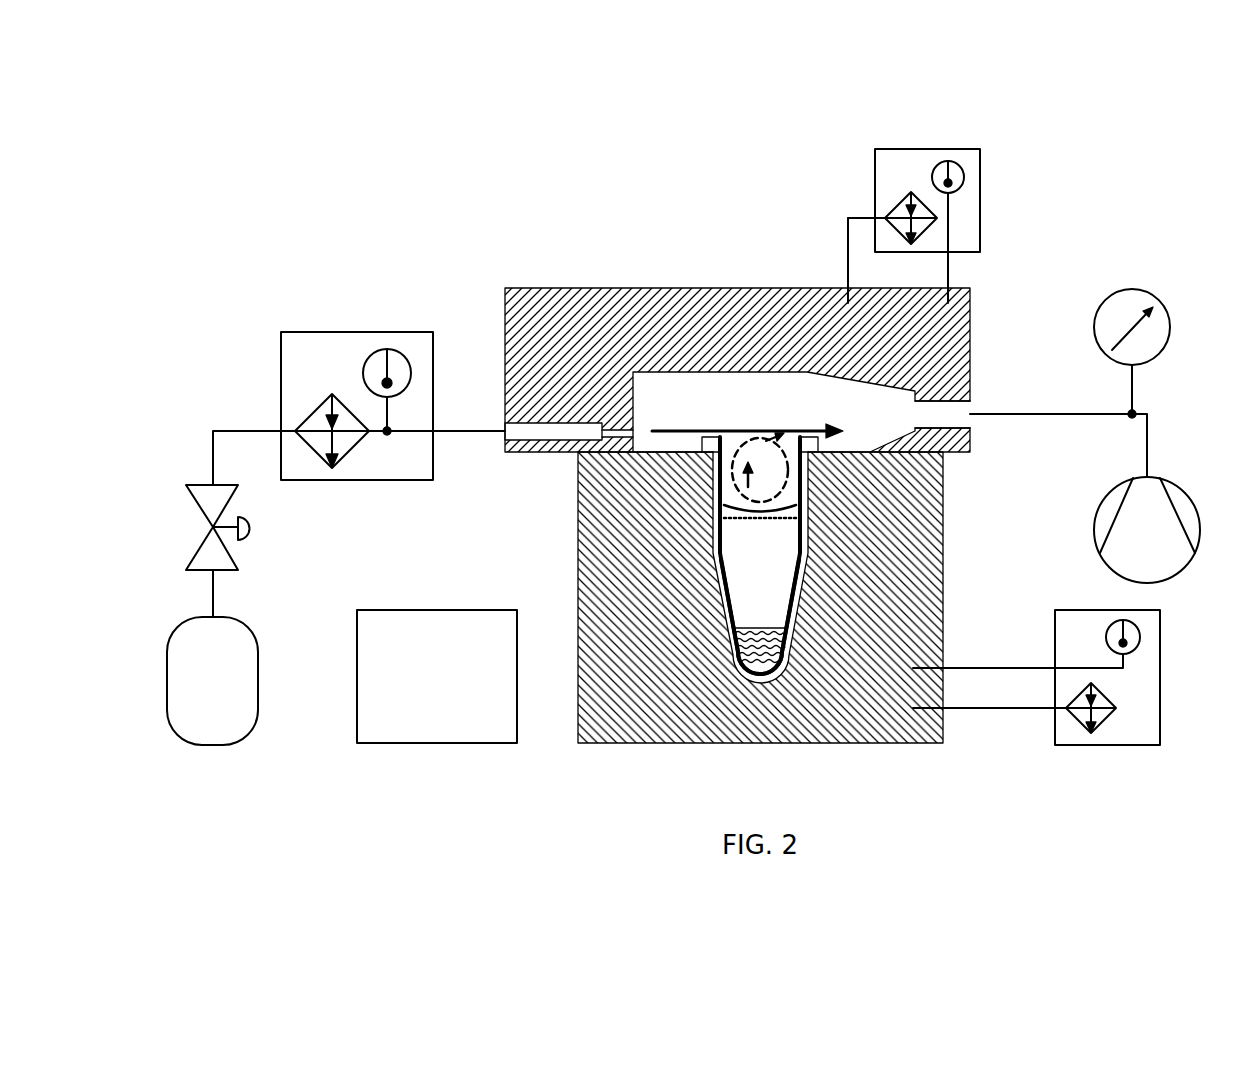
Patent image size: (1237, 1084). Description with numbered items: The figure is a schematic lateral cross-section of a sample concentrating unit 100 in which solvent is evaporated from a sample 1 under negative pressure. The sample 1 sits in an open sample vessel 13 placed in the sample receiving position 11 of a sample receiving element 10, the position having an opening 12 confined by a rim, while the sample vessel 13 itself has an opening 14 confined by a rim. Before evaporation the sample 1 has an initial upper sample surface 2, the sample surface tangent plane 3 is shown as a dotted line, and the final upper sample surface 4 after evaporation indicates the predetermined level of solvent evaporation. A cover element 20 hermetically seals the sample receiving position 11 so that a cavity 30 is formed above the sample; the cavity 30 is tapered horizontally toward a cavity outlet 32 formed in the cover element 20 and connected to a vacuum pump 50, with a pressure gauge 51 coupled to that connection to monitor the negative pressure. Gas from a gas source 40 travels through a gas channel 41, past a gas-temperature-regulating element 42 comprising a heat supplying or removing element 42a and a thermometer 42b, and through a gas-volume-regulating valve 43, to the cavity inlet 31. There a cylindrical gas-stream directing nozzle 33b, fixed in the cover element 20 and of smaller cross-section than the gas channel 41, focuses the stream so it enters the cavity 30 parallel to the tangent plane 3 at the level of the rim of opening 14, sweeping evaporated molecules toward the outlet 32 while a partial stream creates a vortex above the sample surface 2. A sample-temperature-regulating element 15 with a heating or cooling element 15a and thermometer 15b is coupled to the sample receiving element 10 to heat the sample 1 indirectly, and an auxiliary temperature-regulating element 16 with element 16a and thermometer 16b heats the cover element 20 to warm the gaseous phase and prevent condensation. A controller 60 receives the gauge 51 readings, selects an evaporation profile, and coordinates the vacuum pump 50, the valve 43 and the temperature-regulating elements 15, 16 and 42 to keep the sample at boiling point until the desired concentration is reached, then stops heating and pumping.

The sample concentrating unit 100 is at (484, 254).
The sample 1 is at (738, 650).
The initial upper sample surface 2 is at (728, 510).
The sample surface tangent plane 3 is at (731, 521).
The final upper sample surface 4 is at (771, 626).
The sample receiving element 10 is at (632, 628).
The sample receiving position 11 is at (812, 521).
The opening 12 is at (820, 455).
The sample vessel 13 is at (800, 572).
The opening of the sample vessel 14 is at (721, 437).
The sample-temperature-regulating element 15 is at (1162, 630).
The element for supplying or removing heat 15a is at (1110, 718).
The thermometer 15b is at (1137, 648).
The auxiliary temperature-regulating element 16 is at (980, 205).
The element for supplying or removing heat 16a is at (893, 210).
The thermometer 16b is at (932, 177).
The cover element 20 is at (960, 318).
The cavity 30 is at (788, 385).
The cavity inlet 31 is at (553, 432).
The cavity outlet 32 is at (943, 408).
The gas-stream directing nozzle 33b is at (620, 432).
The gas source 40 is at (212, 681).
The gas channel 41 is at (240, 431).
The gas-temperature-regulating element 42 is at (331, 332).
The element for supplying or removing heat to or from the gas stream 42a is at (318, 405).
The thermometer 42b is at (397, 350).
The gas-volume-regulating valve 43 is at (213, 552).
The vacuum pump 50 is at (1173, 477).
The pressure gauge 51 is at (1157, 297).
The controller 60 is at (437, 676).